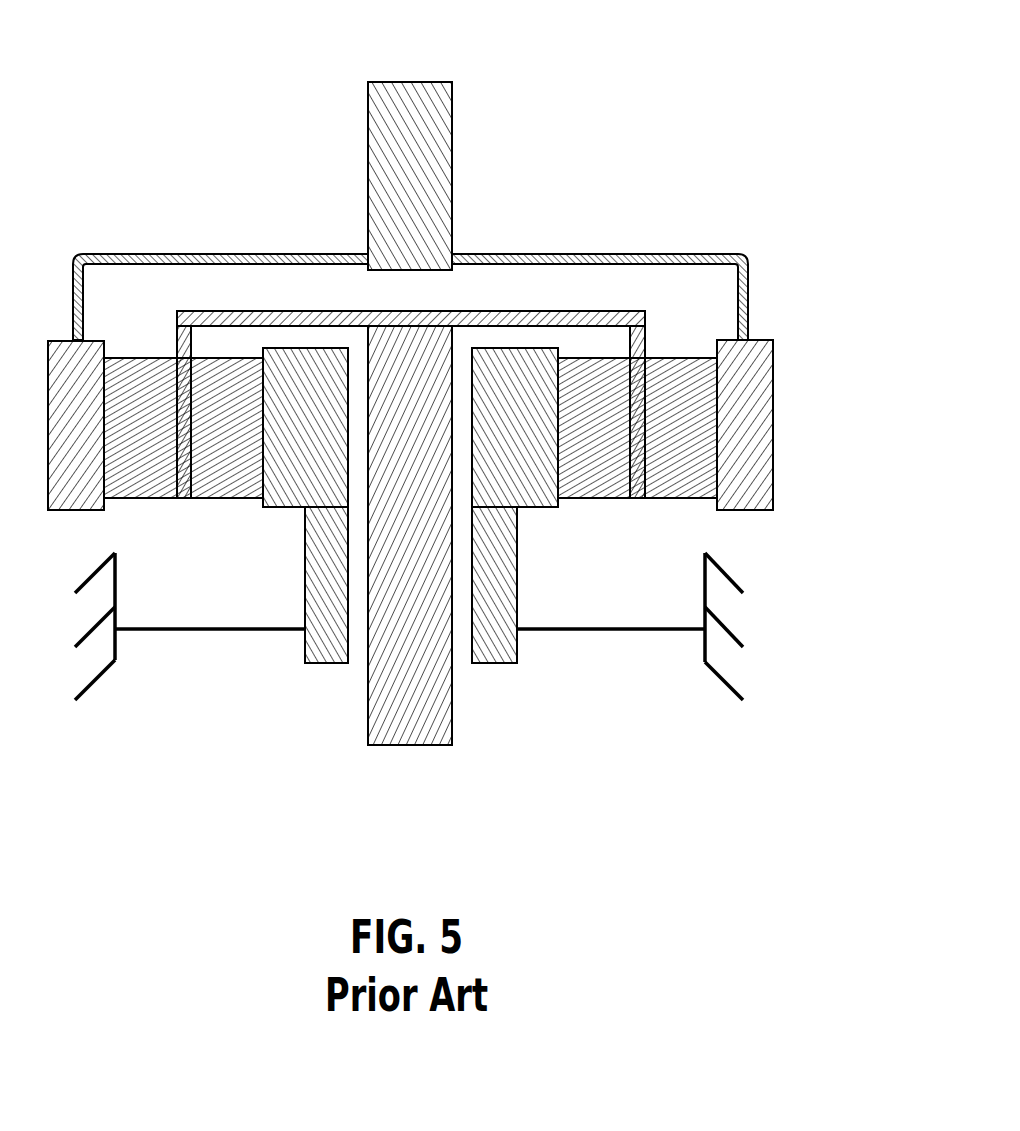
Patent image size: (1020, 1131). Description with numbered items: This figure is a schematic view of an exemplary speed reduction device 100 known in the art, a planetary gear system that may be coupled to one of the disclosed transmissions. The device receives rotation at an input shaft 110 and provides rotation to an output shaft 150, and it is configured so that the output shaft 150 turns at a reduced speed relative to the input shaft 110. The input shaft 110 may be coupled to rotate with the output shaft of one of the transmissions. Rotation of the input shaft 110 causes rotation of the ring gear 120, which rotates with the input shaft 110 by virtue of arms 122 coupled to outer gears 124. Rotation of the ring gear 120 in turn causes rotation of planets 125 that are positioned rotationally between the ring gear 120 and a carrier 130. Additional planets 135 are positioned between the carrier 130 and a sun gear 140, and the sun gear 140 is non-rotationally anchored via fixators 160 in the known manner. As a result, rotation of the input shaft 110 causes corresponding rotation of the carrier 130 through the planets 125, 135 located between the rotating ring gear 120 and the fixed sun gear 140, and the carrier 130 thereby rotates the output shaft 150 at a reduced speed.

The speed reduction device 100 is at (461, 402).
The input shaft 110 is at (442, 137).
The ring gear 120 is at (454, 317).
The arms 122 is at (698, 255).
The outer gears 124 is at (757, 388).
The planets 125 is at (120, 492).
The carrier 130 is at (590, 310).
The additional planets 135 is at (220, 493).
The sun gear 140 is at (503, 660).
The output shaft 150 is at (398, 738).
The fixators 160 is at (162, 631).